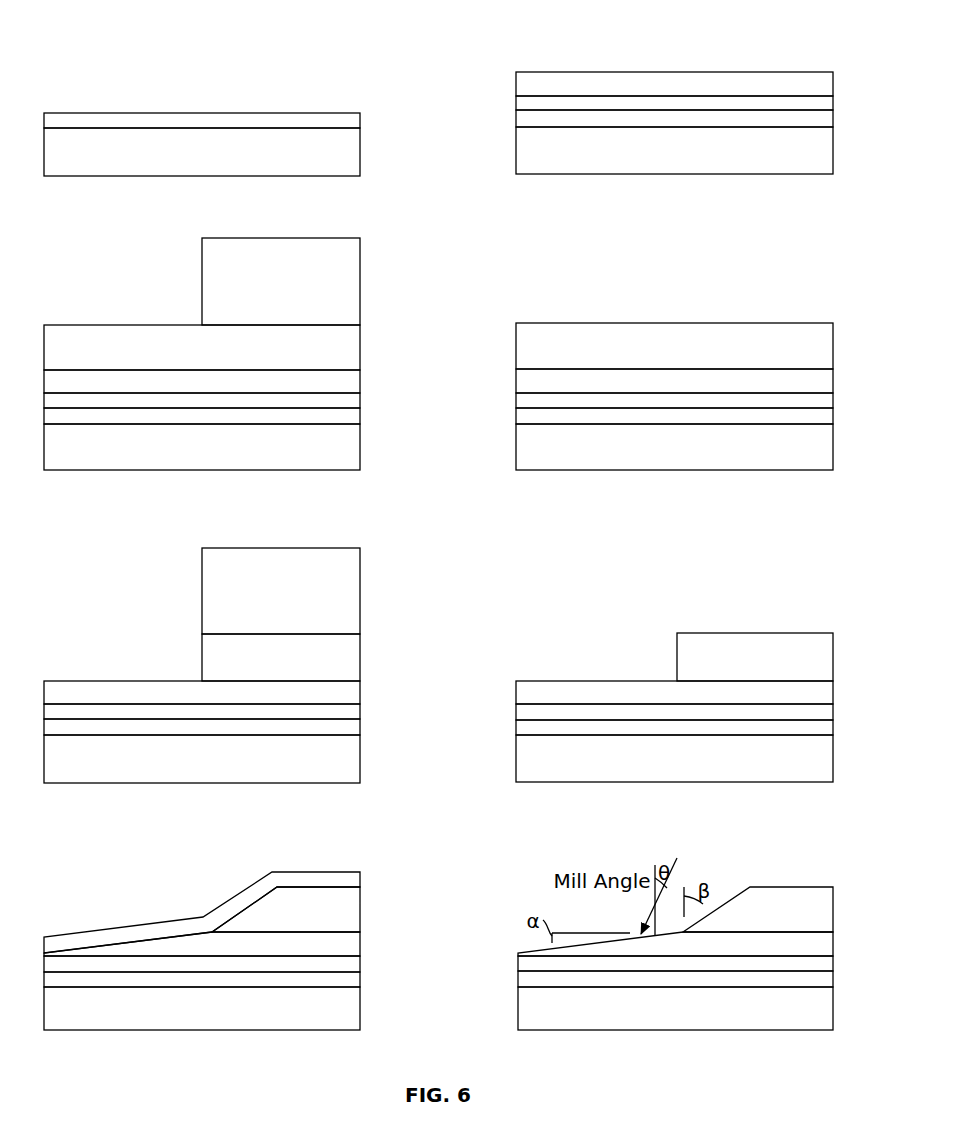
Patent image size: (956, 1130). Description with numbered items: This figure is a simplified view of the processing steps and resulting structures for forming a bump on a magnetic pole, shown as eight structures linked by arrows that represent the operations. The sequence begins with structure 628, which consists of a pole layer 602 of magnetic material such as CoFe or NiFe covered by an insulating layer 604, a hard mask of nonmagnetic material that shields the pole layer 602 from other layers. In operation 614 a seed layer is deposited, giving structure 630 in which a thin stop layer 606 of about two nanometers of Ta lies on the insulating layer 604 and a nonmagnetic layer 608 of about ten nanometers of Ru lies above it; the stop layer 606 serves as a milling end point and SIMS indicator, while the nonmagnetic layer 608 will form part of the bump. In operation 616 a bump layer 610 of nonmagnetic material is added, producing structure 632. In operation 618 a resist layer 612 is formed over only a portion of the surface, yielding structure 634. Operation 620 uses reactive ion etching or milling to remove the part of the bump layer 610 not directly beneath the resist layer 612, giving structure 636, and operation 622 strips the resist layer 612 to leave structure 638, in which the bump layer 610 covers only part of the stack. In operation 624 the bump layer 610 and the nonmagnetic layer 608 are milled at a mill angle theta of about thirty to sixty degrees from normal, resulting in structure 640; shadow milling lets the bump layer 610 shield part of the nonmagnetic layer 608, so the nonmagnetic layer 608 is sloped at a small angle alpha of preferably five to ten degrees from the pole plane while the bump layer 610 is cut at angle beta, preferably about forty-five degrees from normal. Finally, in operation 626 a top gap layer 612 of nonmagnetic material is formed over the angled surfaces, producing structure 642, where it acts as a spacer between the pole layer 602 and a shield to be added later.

The pole layer 602 is at (185, 161).
The insulating layer 604 is at (128, 113).
The stop layer 606 is at (516, 100).
The nonmagnetic layer 608 is at (656, 93).
The bump layer 610 is at (657, 356).
The resist layer 612 is at (263, 293).
The operation 614 is at (483, 152).
The operation 616 is at (674, 222).
The operation 618 is at (490, 448).
The operation 620 is at (202, 530).
The operation 622 is at (390, 758).
The operation 624 is at (674, 812).
The operation 626 is at (490, 1007).
The structure 628 is at (277, 72).
The structure 630 is at (748, 52).
The structure 632 is at (750, 311).
The structure 634 is at (127, 310).
The structure 636 is at (127, 620).
The structure 638 is at (750, 621).
The structure 640 is at (750, 873).
The structure 642 is at (213, 878).